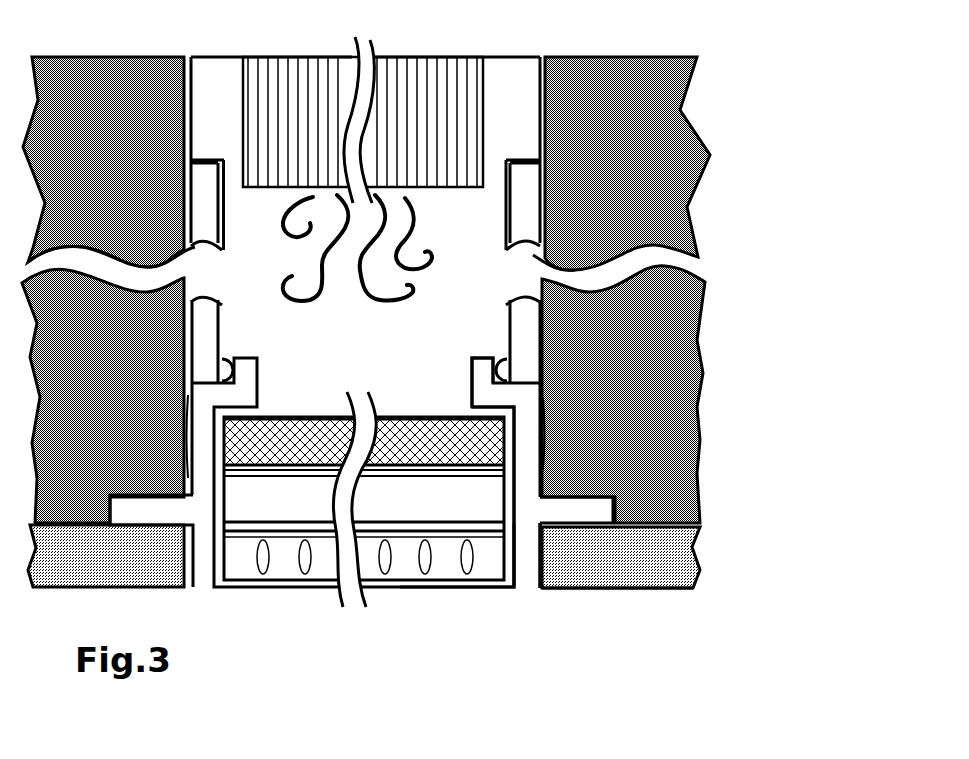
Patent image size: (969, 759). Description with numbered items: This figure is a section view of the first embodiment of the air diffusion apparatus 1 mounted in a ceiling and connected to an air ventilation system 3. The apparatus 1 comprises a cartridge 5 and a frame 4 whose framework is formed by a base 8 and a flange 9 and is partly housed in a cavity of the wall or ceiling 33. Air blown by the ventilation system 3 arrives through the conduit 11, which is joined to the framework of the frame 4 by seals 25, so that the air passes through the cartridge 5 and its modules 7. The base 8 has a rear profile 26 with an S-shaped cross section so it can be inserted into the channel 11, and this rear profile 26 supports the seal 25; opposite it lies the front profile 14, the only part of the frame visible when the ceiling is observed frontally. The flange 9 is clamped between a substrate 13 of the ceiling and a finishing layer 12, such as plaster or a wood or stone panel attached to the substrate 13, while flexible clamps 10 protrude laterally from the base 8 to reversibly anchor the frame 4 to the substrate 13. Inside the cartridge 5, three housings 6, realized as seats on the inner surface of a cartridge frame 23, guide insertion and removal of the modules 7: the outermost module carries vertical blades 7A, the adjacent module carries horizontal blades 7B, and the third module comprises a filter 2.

The diffusion apparatus 1 is at (535, 635).
The filter 2 is at (298, 433).
The ventilation system 3 is at (324, 133).
The frame 4 is at (557, 530).
The cartridge 5 is at (307, 602).
The housings 6 is at (497, 550).
The modules 7 is at (337, 473).
The vertical blades 7A is at (420, 577).
The horizontal blades 7B is at (328, 498).
The base 8 is at (500, 588).
The flange 9 is at (590, 512).
The clamps 10 is at (540, 403).
The conduit 11 is at (202, 207).
The finishing layer 12 is at (670, 563).
The substrate 13 is at (652, 189).
The front profile 14 is at (527, 588).
The cartridge frame 23 is at (215, 587).
The seal 25 is at (490, 364).
The rear profile 26 is at (483, 390).
The wall or ceiling 33 is at (707, 598).